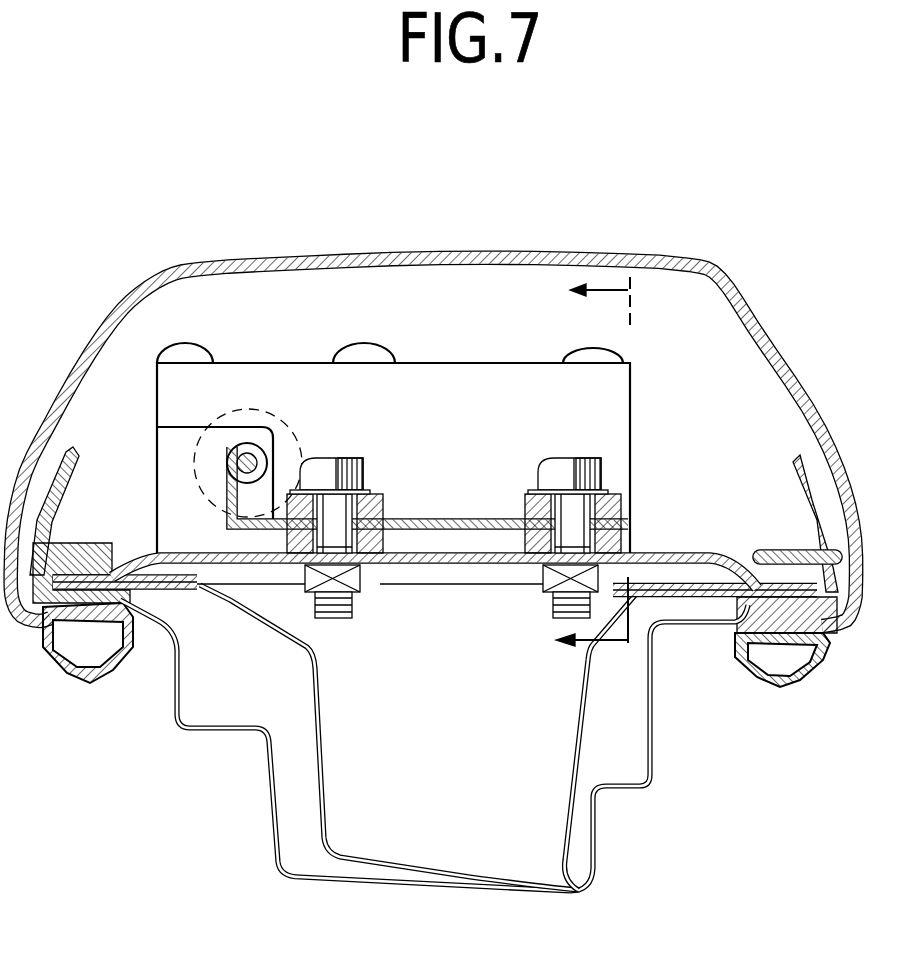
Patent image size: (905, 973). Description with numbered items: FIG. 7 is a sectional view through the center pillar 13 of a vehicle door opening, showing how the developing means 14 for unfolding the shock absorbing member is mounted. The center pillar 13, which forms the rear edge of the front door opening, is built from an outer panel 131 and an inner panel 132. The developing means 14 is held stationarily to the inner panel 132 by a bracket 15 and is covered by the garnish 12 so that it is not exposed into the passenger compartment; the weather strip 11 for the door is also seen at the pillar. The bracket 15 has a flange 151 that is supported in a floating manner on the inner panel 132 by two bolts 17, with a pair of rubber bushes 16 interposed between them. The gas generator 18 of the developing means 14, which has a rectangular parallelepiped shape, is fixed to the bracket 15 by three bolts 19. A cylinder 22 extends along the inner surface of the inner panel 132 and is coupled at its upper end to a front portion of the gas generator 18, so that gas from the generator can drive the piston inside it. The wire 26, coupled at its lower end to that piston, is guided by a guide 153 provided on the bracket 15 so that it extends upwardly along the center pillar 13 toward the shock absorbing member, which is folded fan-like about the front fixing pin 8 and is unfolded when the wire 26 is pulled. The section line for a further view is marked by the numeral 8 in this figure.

The weather strip 11 is at (86, 686).
The garnish 12 is at (338, 255).
The center pillar 13 is at (266, 762).
The outer panel 131 is at (358, 886).
The inner panel 132 is at (440, 564).
The developing means 14 is at (482, 352).
The bracket 15 is at (420, 414).
The flange 151 is at (453, 519).
The guide 153 is at (268, 461).
The rubber bush 16 is at (368, 490).
The bolt 17 is at (332, 618).
The gas generator 18 is at (150, 437).
The bolt 19 is at (195, 348).
The cylinder 22 is at (195, 453).
The wire 26 is at (233, 470).
The front fixing pin 8 is at (578, 484).